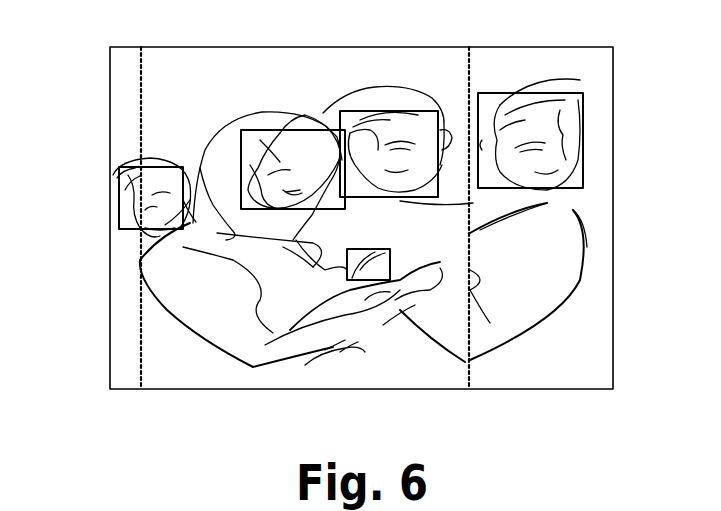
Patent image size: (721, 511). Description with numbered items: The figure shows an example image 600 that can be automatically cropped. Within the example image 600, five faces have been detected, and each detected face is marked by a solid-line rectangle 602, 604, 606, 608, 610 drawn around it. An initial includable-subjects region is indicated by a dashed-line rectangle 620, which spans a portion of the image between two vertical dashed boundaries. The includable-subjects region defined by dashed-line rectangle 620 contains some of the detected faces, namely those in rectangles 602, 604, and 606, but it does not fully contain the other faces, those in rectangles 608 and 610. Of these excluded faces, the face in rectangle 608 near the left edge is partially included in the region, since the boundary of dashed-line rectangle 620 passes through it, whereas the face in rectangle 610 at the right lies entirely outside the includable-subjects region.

The example image 600 is at (122, 71).
The solid-line rectangle 602 is at (292, 128).
The solid-line rectangle 604 is at (387, 110).
The solid-line rectangle 606 is at (386, 282).
The solid-line rectangle 608 is at (120, 212).
The solid-line rectangle 610 is at (585, 115).
The dashed-line rectangle 620 is at (140, 134).